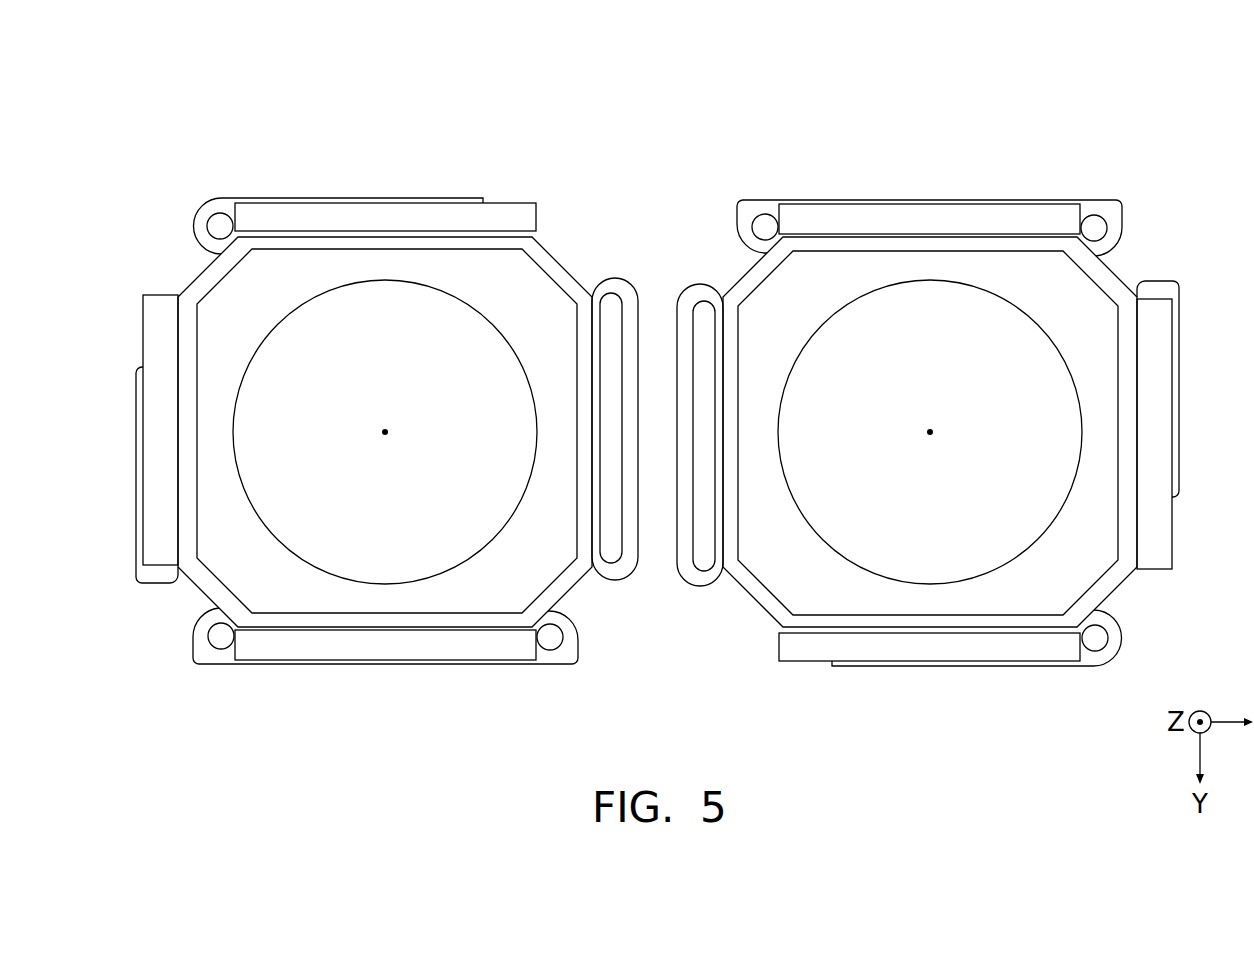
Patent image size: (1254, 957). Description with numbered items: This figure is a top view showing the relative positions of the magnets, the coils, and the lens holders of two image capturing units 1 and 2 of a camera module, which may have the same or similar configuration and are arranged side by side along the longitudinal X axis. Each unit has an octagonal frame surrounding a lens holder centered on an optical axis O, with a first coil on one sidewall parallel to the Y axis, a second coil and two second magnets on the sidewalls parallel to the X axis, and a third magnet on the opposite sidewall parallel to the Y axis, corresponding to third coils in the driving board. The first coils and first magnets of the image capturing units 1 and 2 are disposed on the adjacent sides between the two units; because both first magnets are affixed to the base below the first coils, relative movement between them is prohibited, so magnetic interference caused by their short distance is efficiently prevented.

The image capturing unit 1 is at (146, 156).
The image capturing unit 2 is at (1169, 156).